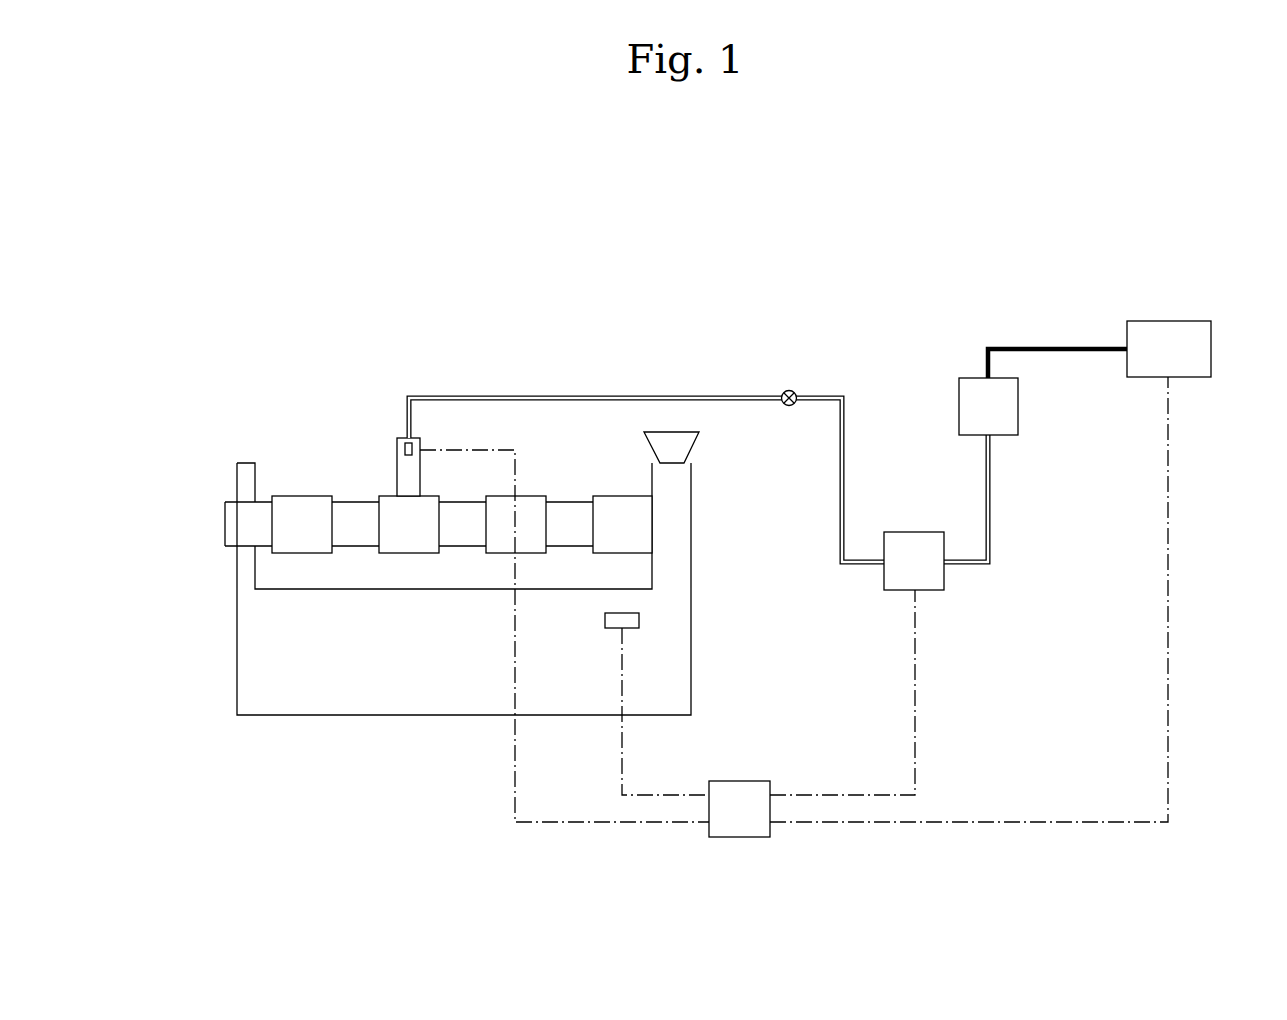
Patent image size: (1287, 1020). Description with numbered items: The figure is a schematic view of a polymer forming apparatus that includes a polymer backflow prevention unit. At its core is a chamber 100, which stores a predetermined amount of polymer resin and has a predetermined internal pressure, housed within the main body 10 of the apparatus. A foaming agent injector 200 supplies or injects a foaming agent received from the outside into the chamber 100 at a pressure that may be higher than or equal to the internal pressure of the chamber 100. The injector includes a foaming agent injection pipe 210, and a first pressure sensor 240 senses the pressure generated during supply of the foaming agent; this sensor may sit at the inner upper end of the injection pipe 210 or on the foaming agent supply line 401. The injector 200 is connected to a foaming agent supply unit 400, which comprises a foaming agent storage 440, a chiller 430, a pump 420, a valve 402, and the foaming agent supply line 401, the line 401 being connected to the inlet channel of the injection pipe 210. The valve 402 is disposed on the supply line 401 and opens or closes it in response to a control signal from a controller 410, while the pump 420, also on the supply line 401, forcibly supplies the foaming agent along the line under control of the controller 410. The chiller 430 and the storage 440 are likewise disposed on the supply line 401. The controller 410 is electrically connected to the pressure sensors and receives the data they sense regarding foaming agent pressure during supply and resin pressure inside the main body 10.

The main body 10 is at (248, 664).
The chamber 100 is at (410, 545).
The foaming agent injector 200 is at (378, 462).
The foaming agent injection pipe 210 is at (640, 622).
The first pressure sensor 240 is at (405, 440).
The foaming agent supply unit 400 is at (916, 372).
The foaming agent supply line 401 is at (596, 395).
The valve 402 is at (789, 390).
The controller 410 is at (738, 838).
The pump 420 is at (945, 576).
The chiller 430 is at (1019, 405).
The foaming agent storage 440 is at (1168, 320).